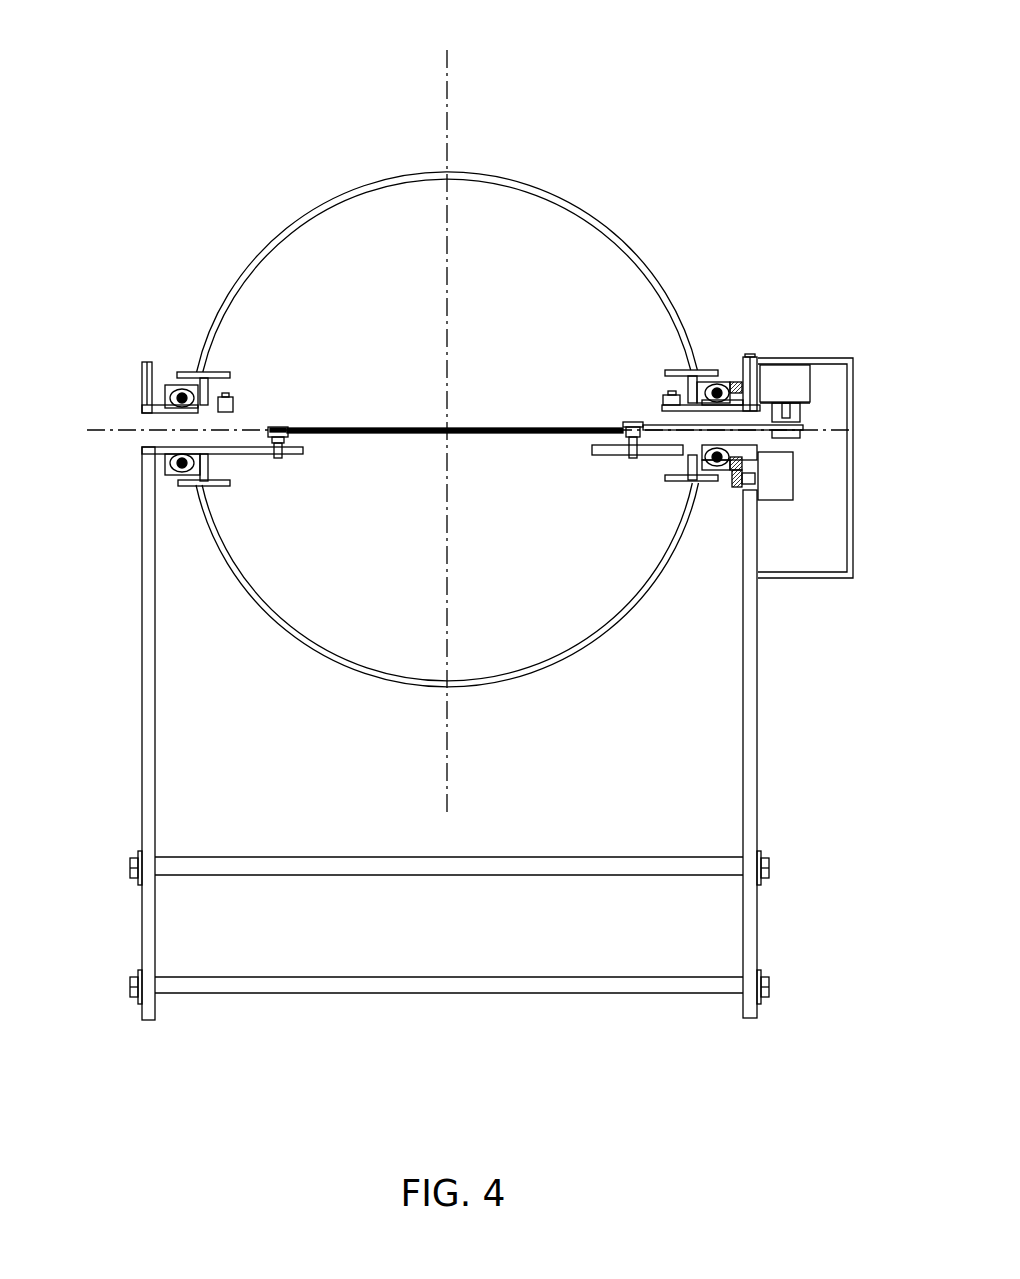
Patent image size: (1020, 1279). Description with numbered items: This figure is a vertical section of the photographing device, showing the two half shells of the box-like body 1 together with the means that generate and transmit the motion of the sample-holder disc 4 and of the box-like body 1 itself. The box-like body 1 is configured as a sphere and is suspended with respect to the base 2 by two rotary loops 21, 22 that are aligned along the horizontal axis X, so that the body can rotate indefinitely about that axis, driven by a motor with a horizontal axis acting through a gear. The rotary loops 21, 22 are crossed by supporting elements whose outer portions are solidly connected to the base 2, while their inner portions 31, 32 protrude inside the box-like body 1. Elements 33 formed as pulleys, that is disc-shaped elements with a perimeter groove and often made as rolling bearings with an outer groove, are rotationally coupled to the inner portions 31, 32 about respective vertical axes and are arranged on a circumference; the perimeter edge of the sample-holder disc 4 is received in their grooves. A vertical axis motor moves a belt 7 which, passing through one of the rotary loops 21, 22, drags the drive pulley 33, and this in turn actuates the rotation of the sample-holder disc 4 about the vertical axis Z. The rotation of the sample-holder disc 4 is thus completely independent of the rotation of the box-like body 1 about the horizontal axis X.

The box-like body 1 is at (597, 130).
The base 2 is at (752, 787).
The sample-holder disc 4 is at (387, 427).
The belt 7 is at (757, 428).
The rotary loop 21 is at (157, 316).
The rotary loop 22 is at (745, 320).
The inner portion of support means 31 is at (263, 453).
The inner portion of support means 32 is at (605, 452).
The pulley 33 is at (623, 423).
The horizontal axis X is at (150, 432).
The vertical axis Z is at (447, 88).